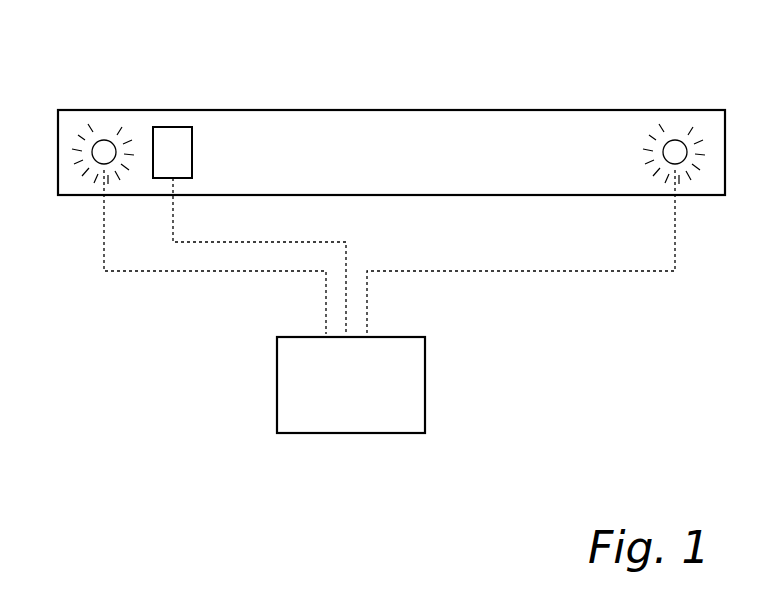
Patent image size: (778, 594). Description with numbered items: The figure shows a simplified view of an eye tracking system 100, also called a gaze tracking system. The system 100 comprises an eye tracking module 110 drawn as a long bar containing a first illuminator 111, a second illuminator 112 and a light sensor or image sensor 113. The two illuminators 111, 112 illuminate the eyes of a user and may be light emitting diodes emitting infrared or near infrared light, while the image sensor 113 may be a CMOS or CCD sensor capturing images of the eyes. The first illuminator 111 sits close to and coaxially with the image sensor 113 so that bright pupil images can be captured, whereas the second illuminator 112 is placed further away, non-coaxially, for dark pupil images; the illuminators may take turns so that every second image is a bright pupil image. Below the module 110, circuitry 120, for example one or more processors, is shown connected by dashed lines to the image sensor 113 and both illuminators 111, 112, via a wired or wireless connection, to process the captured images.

The eye tracking system 100 is at (113, 399).
The eye tracking module 110 is at (335, 110).
The first illuminator 111 is at (106, 146).
The second illuminator 112 is at (673, 146).
The image sensor 113 is at (163, 140).
The circuitry 120 is at (335, 418).